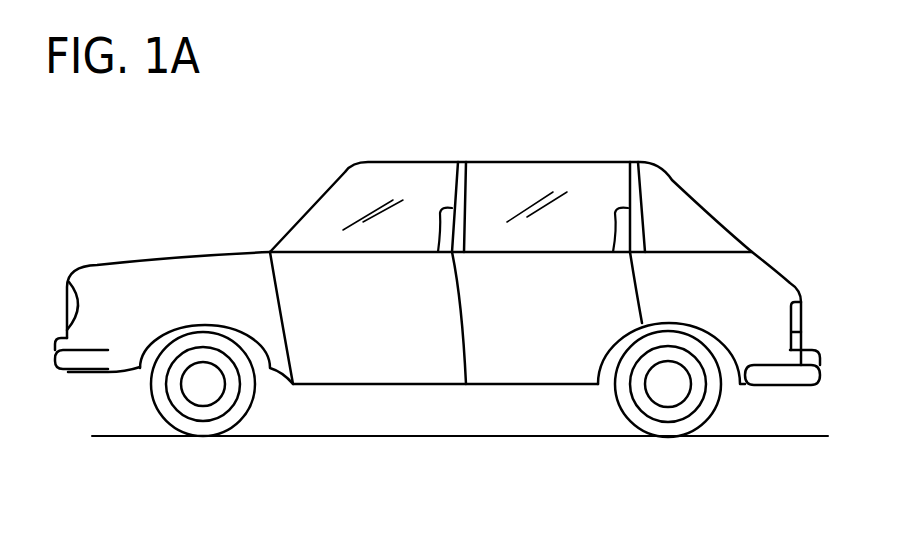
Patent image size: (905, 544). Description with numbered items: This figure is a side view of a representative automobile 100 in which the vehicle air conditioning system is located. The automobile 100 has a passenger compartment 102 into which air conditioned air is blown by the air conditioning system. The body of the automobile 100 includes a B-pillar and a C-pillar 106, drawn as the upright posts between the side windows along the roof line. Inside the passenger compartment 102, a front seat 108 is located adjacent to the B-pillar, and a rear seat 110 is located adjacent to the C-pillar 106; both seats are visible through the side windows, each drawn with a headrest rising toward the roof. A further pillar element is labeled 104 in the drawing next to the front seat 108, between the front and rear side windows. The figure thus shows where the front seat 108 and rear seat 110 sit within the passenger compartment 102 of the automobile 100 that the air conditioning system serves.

The automobile 100 is at (620, 160).
The passenger compartment 102 is at (532, 205).
The B-pillar 104 is at (455, 190).
The C-pillar 106 is at (630, 175).
The front seat 108 is at (437, 212).
The rear seat 110 is at (623, 207).